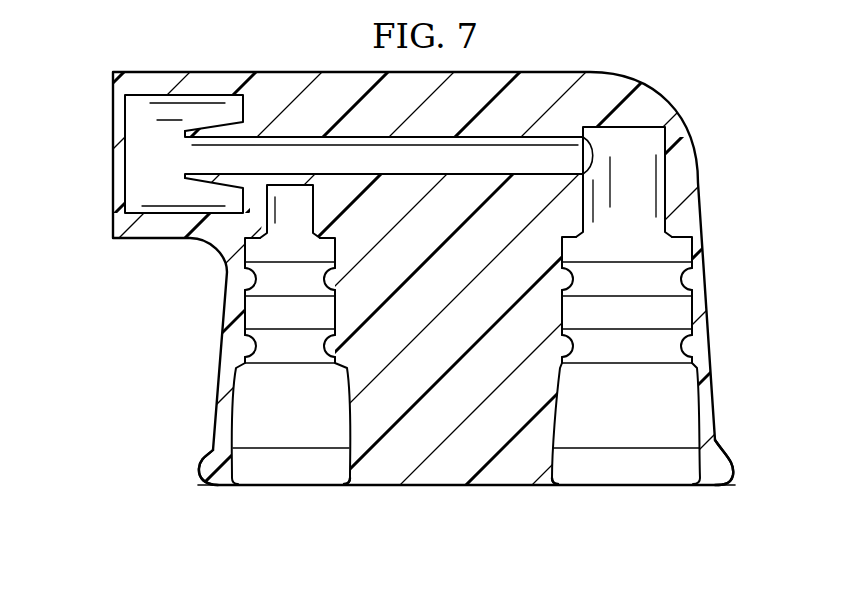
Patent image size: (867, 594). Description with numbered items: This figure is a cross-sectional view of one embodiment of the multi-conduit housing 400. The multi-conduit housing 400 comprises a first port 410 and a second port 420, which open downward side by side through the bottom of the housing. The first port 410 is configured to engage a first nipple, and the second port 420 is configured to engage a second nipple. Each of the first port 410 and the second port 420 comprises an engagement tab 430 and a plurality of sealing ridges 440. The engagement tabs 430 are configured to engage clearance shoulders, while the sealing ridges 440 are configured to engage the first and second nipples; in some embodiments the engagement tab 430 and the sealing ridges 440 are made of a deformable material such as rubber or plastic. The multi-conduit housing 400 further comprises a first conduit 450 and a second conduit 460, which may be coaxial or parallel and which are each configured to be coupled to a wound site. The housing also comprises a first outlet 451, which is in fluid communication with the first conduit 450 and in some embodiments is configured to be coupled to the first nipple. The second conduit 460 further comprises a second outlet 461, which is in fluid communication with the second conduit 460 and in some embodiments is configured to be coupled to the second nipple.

The multi-conduit housing 400 is at (284, 71).
The first port 410 is at (268, 416).
The second port 420 is at (602, 416).
The engagement tab 430 is at (230, 486).
The sealing ridges 440 is at (236, 292).
The first conduit 450 is at (120, 98).
The first outlet 451 is at (310, 216).
The second conduit 460 is at (509, 176).
The second outlet 461 is at (655, 122).